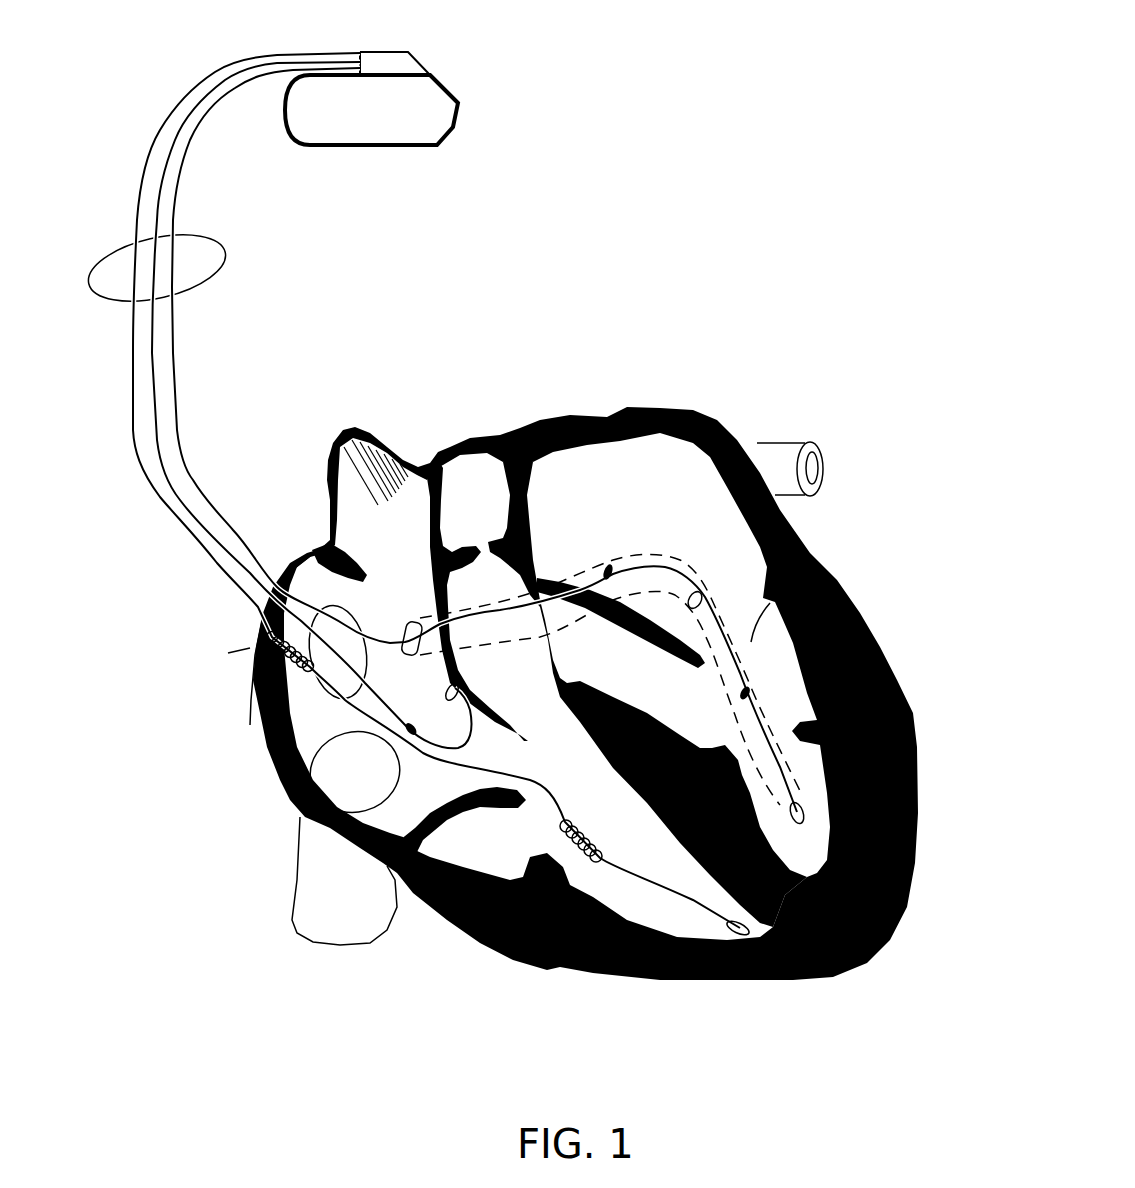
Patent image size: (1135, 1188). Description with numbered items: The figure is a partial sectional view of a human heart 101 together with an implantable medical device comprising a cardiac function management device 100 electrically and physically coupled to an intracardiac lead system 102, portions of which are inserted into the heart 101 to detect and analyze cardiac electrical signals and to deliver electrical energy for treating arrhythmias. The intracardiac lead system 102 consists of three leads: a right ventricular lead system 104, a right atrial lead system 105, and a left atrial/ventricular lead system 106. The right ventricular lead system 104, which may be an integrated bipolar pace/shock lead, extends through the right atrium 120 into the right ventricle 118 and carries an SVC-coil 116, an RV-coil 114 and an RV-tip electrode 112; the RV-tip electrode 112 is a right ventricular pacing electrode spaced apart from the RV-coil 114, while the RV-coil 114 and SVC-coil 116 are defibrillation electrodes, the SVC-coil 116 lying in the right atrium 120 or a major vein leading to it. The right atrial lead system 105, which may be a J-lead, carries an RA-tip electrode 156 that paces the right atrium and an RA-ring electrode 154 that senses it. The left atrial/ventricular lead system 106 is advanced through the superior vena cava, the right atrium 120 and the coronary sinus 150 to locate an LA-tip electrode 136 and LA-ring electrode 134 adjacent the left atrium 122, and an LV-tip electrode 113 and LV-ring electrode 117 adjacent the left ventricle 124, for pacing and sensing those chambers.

The cardiac function management device 100 is at (405, 52).
The heart 101 is at (586, 412).
The intracardiac lead system 102 is at (222, 246).
The right ventricular lead system 104 is at (133, 350).
The right atrial lead system 105 is at (157, 385).
The left atrial/ventricular lead system 106 is at (177, 428).
The RV-tip electrode 112 is at (734, 922).
The LV-tip electrode 113 is at (796, 817).
The RV-coil 114 is at (563, 826).
The SVC-coil 116 is at (266, 642).
The LV-ring electrode 117 is at (746, 692).
The right ventricle 118 is at (579, 767).
The right atrium 120 is at (336, 729).
The left atrium 122 is at (660, 493).
The left ventricle 124 is at (697, 707).
The LA-ring electrode 134 is at (608, 568).
The LA-tip electrode 136 is at (694, 594).
The coronary sinus 150 is at (411, 622).
The RA-ring electrode 154 is at (432, 712).
The RA-tip electrode 156 is at (449, 690).